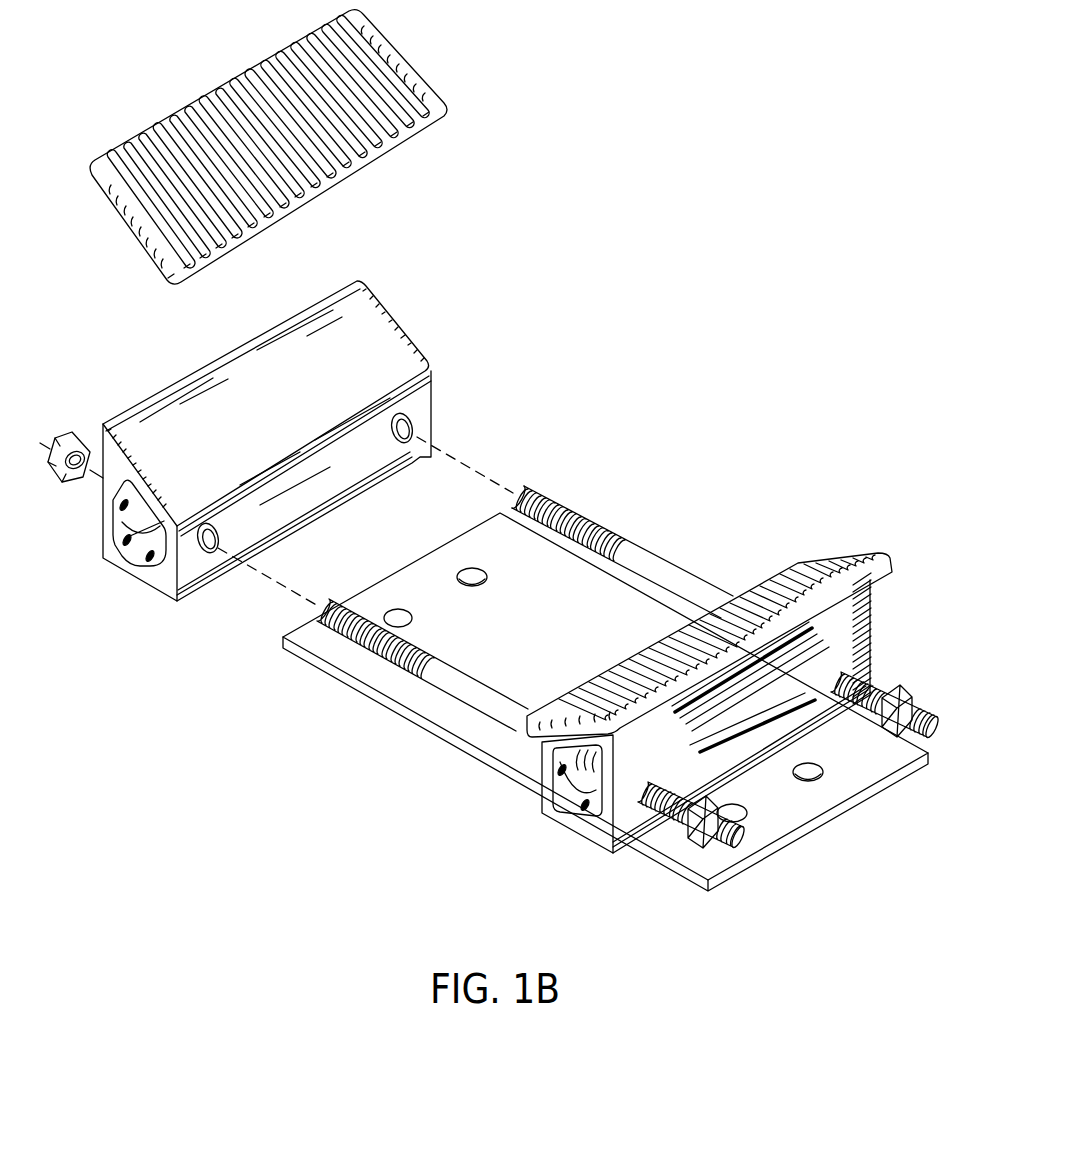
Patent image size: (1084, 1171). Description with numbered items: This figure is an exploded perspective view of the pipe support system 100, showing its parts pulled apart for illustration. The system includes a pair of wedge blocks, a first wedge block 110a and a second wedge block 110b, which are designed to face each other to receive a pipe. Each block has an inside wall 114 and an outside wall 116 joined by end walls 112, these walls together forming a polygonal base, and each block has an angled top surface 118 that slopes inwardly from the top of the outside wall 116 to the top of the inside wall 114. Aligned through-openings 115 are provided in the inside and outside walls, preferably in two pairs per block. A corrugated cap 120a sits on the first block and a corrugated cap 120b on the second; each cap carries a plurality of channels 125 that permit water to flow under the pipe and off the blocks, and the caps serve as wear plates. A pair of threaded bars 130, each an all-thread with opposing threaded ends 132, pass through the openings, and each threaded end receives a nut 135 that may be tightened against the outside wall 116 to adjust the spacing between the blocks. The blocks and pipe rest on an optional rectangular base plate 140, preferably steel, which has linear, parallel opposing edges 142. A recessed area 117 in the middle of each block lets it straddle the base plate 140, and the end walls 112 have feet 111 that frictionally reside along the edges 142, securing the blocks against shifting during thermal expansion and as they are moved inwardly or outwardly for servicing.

The pipe support system 100 is at (735, 393).
The first wedge block 110a is at (213, 350).
The second wedge block 110b is at (583, 847).
The feet 111 is at (423, 458).
The end walls 112 is at (163, 580).
The inside wall 114 is at (417, 433).
The through-openings 115 is at (217, 548).
The outside wall 116 is at (850, 621).
The recessed area 117 is at (342, 503).
The angled top surface 118 is at (377, 335).
The corrugated cap 120a is at (387, 65).
The corrugated cap 120b is at (840, 557).
The channels 125 is at (243, 82).
The threaded bar 130 is at (677, 567).
The threaded ends 132 is at (522, 489).
The nut 135 is at (66, 432).
The base plate 140 is at (559, 634).
The edges 142 is at (442, 728).